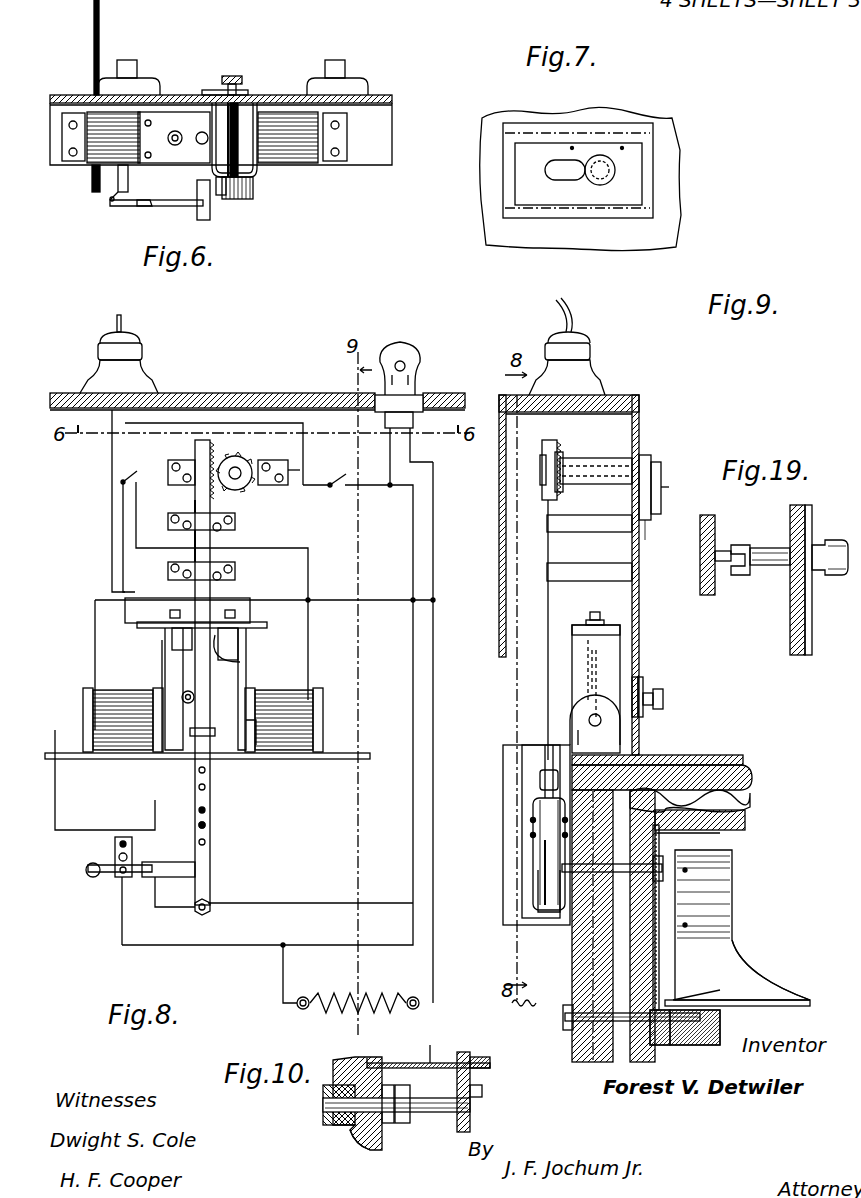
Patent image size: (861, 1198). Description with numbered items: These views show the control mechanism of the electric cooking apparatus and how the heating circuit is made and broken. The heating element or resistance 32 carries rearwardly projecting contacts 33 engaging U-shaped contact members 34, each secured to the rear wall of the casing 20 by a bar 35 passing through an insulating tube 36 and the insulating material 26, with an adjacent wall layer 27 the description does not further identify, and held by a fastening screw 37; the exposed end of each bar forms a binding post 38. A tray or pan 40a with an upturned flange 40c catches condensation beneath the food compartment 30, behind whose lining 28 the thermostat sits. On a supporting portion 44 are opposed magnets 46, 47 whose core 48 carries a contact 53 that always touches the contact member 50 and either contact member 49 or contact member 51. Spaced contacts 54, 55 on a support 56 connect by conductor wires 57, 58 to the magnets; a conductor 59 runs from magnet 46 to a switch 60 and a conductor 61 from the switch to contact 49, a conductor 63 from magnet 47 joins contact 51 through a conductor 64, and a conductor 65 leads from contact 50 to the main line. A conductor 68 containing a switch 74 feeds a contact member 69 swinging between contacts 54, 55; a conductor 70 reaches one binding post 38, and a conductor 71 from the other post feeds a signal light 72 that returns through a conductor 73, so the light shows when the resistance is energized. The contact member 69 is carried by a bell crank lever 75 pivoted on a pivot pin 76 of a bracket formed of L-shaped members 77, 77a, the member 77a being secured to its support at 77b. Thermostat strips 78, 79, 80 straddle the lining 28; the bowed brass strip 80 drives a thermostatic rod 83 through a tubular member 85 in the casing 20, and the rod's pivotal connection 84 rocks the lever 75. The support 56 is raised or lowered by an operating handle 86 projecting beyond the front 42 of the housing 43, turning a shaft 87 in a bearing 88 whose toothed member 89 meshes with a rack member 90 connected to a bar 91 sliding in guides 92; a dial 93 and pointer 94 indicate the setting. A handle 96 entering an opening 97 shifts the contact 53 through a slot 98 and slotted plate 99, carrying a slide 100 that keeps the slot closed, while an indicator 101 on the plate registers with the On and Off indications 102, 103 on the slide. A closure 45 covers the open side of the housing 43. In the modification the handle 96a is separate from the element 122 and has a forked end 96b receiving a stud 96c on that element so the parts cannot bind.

In FIG. 9, the casing 20 is at (700, 780).
In FIG. 10, the insulating material 26 is at (340, 1135).
In FIG. 9, the insulating material 26 is at (722, 780).
In FIG. 9, the wall lining 27 is at (748, 803).
In FIG. 10, the lining 28 is at (358, 1152).
In FIG. 10, the food compartment 30 is at (462, 1056).
In FIG. 9, the food compartment 30 is at (700, 1006).
In FIG. 8, the electrical resistance or heating element 32 is at (318, 993).
In FIG. 10, the electrical resistance or heating element 32 is at (472, 1088).
In FIG. 9, the electrical resistance or heating element 32 is at (722, 1010).
In FIG. 10, the contacts of the heating element 33 is at (411, 1095).
In FIG. 9, the contacts of the heating element 33 is at (700, 1045).
In FIG. 10, the contact members 34 is at (390, 1123).
In FIG. 9, the contact members 34 is at (665, 1045).
In FIG. 10, the bar 35 is at (323, 1106).
In FIG. 9, the bar 35 is at (580, 1045).
In FIG. 10, the insulating tube 36 is at (330, 1122).
In FIG. 9, the insulating tube 36 is at (575, 1011).
In FIG. 10, the fastening screw 37 is at (398, 1085).
In FIG. 8, the binding post 38 is at (300, 1010).
In FIG. 9, the binding post 38 is at (565, 1020).
In FIG. 10, the tray or pan 40a is at (430, 1050).
In FIG. 9, the tray or pan 40a is at (782, 1006).
In FIG. 10, the flange 40c is at (367, 1060).
In FIG. 9, the flange 40c is at (740, 990).
In FIG. 6, the front of the housing 42 is at (385, 101).
In FIG. 7, the front of the housing 42 is at (680, 176).
In FIG. 9, the front of the housing 42 is at (640, 620).
In FIG. 9, the housing 43 is at (600, 418).
In FIG. 6, the supporting portion 44 is at (372, 158).
In FIG. 8, the supporting portion 44 is at (320, 760).
In FIG. 9, the supporting portion 44 is at (612, 766).
In FIG. 9, the closure 45 is at (499, 538).
In FIG. 6, the magnet 46 is at (310, 160).
In FIG. 8, the magnet 46 is at (292, 748).
In FIG. 9, the magnet 46 is at (574, 712).
In FIG. 6, the magnet 47 is at (110, 125).
In FIG. 8, the magnet 47 is at (122, 725).
In FIG. 8, the core 48 is at (244, 712).
In FIG. 9, the core 48 is at (601, 726).
In FIG. 6, the contact member 49 is at (213, 148).
In FIG. 8, the contact member 49 is at (172, 638).
In FIG. 6, the contact member 50 is at (200, 133).
In FIG. 8, the contact member 50 is at (242, 660).
In FIG. 6, the contact member 51 is at (168, 139).
In FIG. 8, the contact member 51 is at (238, 643).
In FIG. 9, the contact member 51 is at (606, 608).
In FIG. 8, the contact 53 is at (165, 670).
In FIG. 9, the contact 53 is at (600, 662).
In FIG. 9, the contact 54 is at (545, 810).
In FIG. 8, the contact 55 is at (210, 878).
In FIG. 9, the contact 55 is at (545, 875).
In FIG. 8, the support 56 is at (208, 832).
In FIG. 9, the support 56 is at (562, 790).
In FIG. 8, the conductor wire 57 is at (266, 898).
In FIG. 9, the conductor wire 57 is at (510, 791).
In FIG. 8, the conductor wire 58 is at (90, 814).
In FIG. 9, the conductor wire 58 is at (540, 790).
In FIG. 8, the conductor 59 is at (309, 548).
In FIG. 6, the switch 60 is at (350, 80).
In FIG. 8, the switch 60 is at (143, 472).
In FIG. 8, the conductor 61 is at (123, 527).
In FIG. 8, the conductor 63 is at (95, 604).
In FIG. 8, the conductor 64 is at (250, 606).
In FIG. 9, the conductor 64 is at (580, 625).
In FIG. 8, the conductor 65 is at (112, 472).
In FIG. 8, the conductor 68 is at (205, 410).
In FIG. 6, the contact member 69 is at (165, 208).
In FIG. 8, the contact member 69 is at (165, 866).
In FIG. 9, the contact member 69 is at (545, 850).
In FIG. 8, the conductor 70 is at (283, 984).
In FIG. 8, the conductor 71 is at (435, 492).
In FIG. 9, the conductor 71 is at (525, 1010).
In FIG. 8, the signal light 72 is at (412, 366).
In FIG. 8, the conductor 73 is at (390, 468).
In FIG. 6, the switch 74 is at (160, 72).
In FIG. 8, the switch 74 is at (336, 477).
In FIG. 6, the bell crank lever 75 is at (125, 208).
In FIG. 8, the bell crank lever 75 is at (100, 865).
In FIG. 6, the pivot pin 76 is at (110, 196).
In FIG. 6, the bracket member 77 is at (130, 185).
In FIG. 8, the bracket member 77 is at (132, 856).
In FIG. 8, the bracket member 77a is at (136, 826).
In FIG. 8, the securing point 77b is at (128, 856).
In FIG. 9, the thermostat strip 78 is at (705, 905).
In FIG. 9, the thermostat strip 79 is at (732, 892).
In FIG. 9, the thermostat strip 80 is at (655, 517).
In FIG. 6, the thermostatic rod 83 is at (93, 65).
In FIG. 8, the thermostatic rod 83 is at (92, 880).
In FIG. 9, the thermostatic rod 83 is at (675, 915).
In FIG. 6, the pivotal connection 84 is at (92, 190).
In FIG. 9, the tubular member 85 is at (745, 822).
In FIG. 6, the operating handle 86 is at (232, 76).
In FIG. 9, the operating handle 86 is at (661, 472).
In FIG. 6, the shaft 87 is at (258, 112).
In FIG. 8, the shaft 87 is at (270, 457).
In FIG. 9, the shaft 87 is at (592, 468).
In FIG. 6, the bearing 88 is at (268, 160).
In FIG. 8, the bearing 88 is at (270, 487).
In FIG. 9, the bearing 88 is at (606, 484).
In FIG. 6, the toothed rotatable member 89 is at (252, 200).
In FIG. 8, the toothed rotatable member 89 is at (240, 466).
In FIG. 9, the toothed rotatable member 89 is at (558, 456).
In FIG. 6, the rack member 90 is at (232, 198).
In FIG. 8, the rack member 90 is at (195, 448).
In FIG. 9, the rack member 90 is at (548, 445).
In FIG. 6, the bar 91 is at (203, 220).
In FIG. 8, the bar 91 is at (212, 540).
In FIG. 9, the bar 91 is at (592, 532).
In FIG. 8, the guides 92 is at (176, 514).
In FIG. 9, the guides 92 is at (618, 563).
In FIG. 6, the dial 93 is at (240, 103).
In FIG. 6, the pointer or indicator 94 is at (215, 91).
In FIG. 7, the handle or operating member 96 is at (616, 177).
In FIG. 19, the handle or operating member 96 is at (832, 576).
In FIG. 9, the handle or operating member 96 is at (660, 692).
In FIG. 19, the handle 96a is at (768, 548).
In FIG. 19, the forked end 96b is at (738, 545).
In FIG. 19, the stud 96c is at (722, 562).
In FIG. 8, the opening 97 is at (194, 700).
In FIG. 7, the slot 98 is at (553, 182).
In FIG. 7, the plate 99 is at (520, 126).
In FIG. 19, the plate 99 is at (797, 505).
In FIG. 9, the plate 99 is at (641, 684).
In FIG. 7, the slide 100 is at (516, 158).
In FIG. 19, the slide 100 is at (810, 528).
In FIG. 9, the slide 100 is at (644, 714).
In FIG. 7, the indicator 101 is at (571, 145).
In FIG. 7, the indication 102 is at (578, 147).
In FIG. 7, the indication 103 is at (624, 144).
In FIG. 19, the element 122 is at (708, 515).